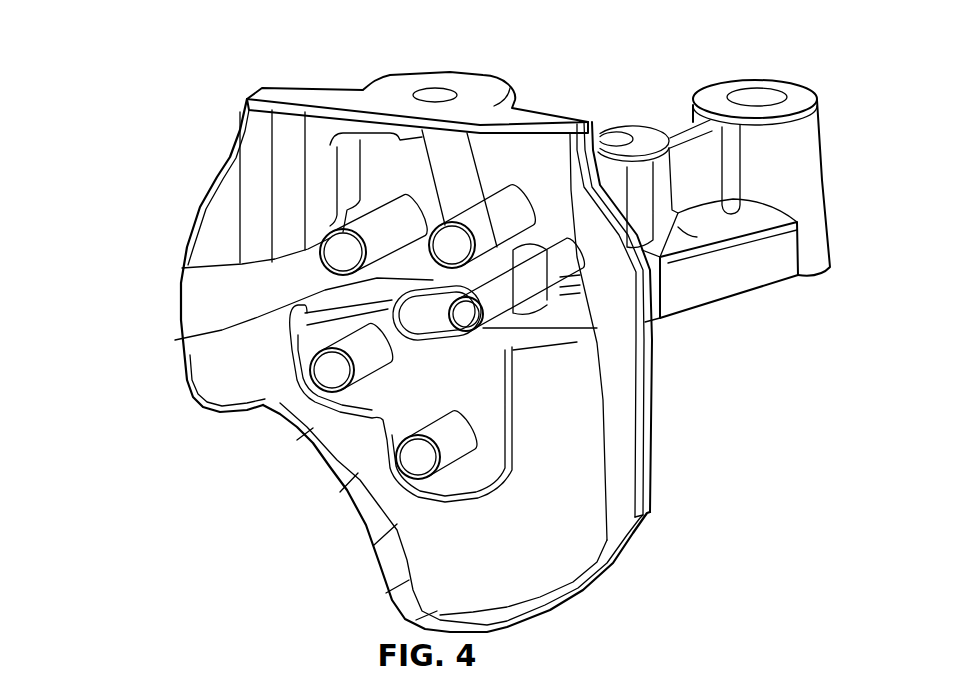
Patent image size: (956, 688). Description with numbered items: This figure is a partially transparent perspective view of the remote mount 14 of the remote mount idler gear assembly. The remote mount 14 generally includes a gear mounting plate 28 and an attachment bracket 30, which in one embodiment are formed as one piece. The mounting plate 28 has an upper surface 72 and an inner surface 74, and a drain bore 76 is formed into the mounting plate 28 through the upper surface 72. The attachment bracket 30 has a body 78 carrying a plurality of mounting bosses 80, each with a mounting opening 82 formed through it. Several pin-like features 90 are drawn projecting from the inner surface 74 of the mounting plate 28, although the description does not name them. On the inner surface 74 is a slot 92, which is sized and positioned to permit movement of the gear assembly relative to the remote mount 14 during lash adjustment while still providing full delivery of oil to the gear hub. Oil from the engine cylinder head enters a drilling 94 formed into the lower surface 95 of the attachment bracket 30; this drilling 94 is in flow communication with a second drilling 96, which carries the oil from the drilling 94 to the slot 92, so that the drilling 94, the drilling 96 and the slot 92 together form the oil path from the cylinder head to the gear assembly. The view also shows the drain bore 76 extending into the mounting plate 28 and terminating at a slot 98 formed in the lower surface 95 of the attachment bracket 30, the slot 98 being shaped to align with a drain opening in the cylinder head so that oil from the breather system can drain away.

The remote mount 14 is at (103, 208).
The gear mounting plate 28 is at (215, 134).
The attachment bracket 30 is at (838, 227).
The upper surface 72 is at (367, 97).
The inner surface 74 is at (200, 353).
The drain bore 76 is at (433, 97).
The body 78 is at (677, 128).
The mounting bosses 80 is at (723, 90).
The mounting opening 82 is at (767, 93).
The pins 90 is at (345, 252).
The slot 92 is at (436, 313).
The drilling 94 is at (552, 293).
The lower surface 95 is at (737, 300).
The drilling 96 is at (493, 303).
The slot 98 is at (207, 352).